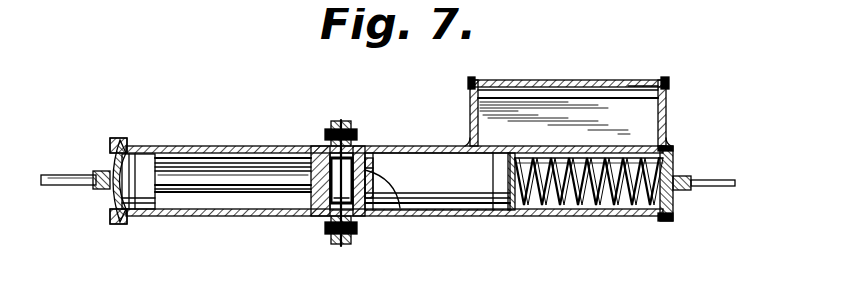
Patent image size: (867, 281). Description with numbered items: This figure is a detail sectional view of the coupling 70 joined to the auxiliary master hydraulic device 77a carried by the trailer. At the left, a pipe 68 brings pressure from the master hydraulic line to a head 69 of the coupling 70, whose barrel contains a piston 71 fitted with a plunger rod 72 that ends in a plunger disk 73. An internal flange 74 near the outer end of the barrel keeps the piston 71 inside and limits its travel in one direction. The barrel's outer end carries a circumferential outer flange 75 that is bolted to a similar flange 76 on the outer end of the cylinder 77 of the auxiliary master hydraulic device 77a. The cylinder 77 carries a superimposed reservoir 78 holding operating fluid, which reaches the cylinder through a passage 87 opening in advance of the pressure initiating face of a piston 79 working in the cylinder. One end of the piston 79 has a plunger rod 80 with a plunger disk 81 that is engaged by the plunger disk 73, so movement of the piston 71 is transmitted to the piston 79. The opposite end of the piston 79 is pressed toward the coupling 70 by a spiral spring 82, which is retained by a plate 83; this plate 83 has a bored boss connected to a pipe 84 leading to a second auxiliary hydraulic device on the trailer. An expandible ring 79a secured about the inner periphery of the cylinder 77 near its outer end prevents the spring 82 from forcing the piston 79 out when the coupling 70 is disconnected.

The pipe 68 is at (50, 179).
The head 69 is at (100, 160).
The coupling 70 is at (179, 137).
The piston 71 is at (133, 155).
The plunger rod 72 is at (205, 186).
The plunger disk 73 is at (312, 147).
The flange 74 is at (302, 192).
The outer flange 75 is at (328, 116).
The flange 76 is at (337, 235).
The cylinder 77 is at (413, 137).
The auxiliary master hydraulic device 77a is at (546, 69).
The reservoir 78 is at (627, 112).
The piston 79 is at (465, 186).
The expandible ring 79a is at (355, 149).
The plunger rod 80 is at (362, 172).
The plunger disk 81 is at (392, 200).
The spiral spring 82 is at (568, 192).
The plate 83 is at (672, 146).
The pipe 84 is at (706, 181).
The passage 87 is at (508, 142).